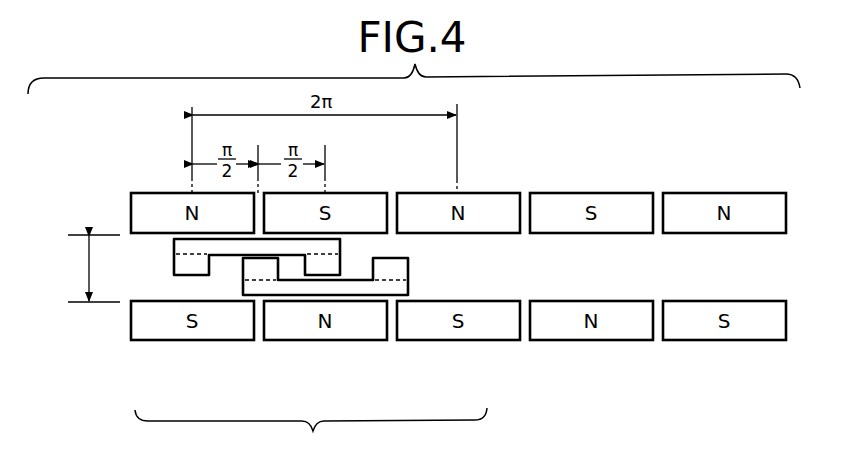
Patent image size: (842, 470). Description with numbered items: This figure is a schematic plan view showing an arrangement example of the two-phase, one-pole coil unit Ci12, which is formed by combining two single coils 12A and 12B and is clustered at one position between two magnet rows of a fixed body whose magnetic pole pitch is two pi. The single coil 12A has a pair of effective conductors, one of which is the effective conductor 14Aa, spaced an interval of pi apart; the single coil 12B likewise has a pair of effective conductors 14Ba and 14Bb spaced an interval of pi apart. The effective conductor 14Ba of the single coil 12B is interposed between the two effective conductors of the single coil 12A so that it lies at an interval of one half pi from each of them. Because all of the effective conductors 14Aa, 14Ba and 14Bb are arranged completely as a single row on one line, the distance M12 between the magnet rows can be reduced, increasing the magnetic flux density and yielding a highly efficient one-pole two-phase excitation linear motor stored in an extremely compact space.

The single coil 12A is at (221, 258).
The single coil 12B is at (352, 288).
The effective conductor 14Aa is at (178, 276).
The effective conductor 14Ba is at (255, 288).
The effective conductor 14Bb is at (397, 284).
The distance between the magnet rows M12 is at (78, 268).
The coil unit Ci12 is at (311, 438).